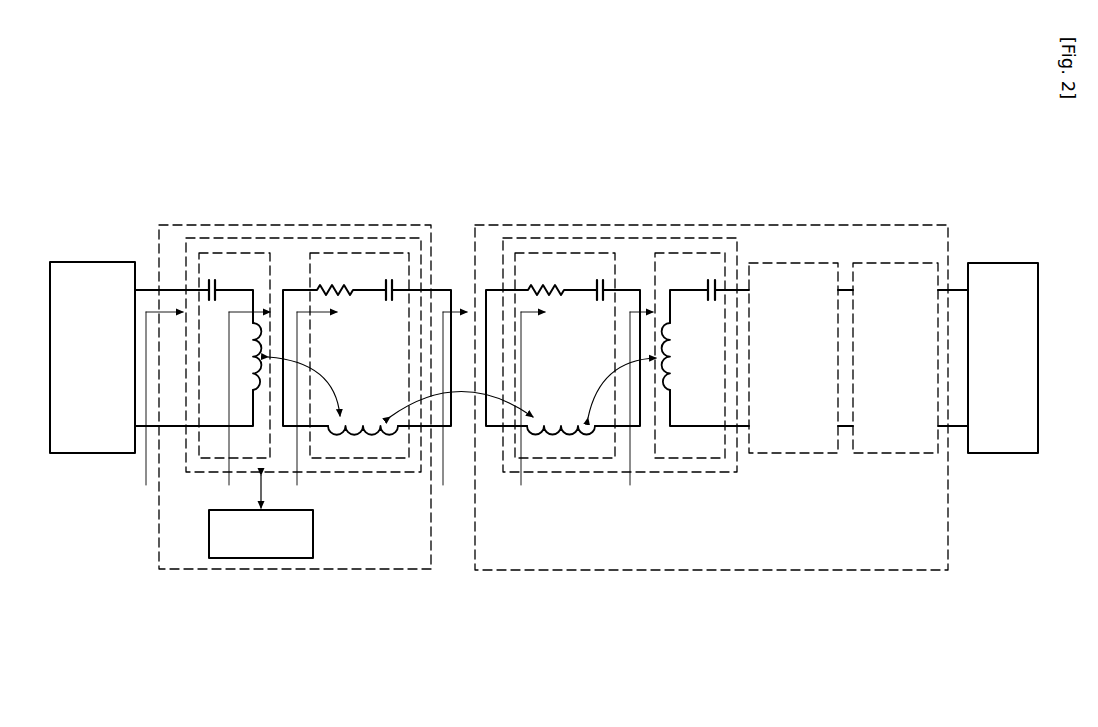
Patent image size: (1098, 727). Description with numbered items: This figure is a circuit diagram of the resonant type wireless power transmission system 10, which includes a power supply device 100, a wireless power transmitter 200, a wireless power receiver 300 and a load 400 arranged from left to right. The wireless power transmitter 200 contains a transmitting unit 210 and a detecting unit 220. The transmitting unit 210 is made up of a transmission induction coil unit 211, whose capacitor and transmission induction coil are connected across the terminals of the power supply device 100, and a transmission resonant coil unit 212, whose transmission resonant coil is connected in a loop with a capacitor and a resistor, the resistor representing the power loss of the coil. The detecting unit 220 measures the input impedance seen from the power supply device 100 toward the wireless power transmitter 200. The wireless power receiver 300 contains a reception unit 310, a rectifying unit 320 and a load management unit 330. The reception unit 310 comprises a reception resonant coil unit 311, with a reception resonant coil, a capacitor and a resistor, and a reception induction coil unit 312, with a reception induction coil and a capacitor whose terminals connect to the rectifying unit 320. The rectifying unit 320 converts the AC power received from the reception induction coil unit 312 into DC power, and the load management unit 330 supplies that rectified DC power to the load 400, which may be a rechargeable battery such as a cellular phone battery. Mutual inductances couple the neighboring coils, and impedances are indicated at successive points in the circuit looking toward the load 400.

The wireless power transmission system 10 is at (89, 59).
The power supply device 100 is at (93, 262).
The wireless power transmitter 200 is at (194, 225).
The transmitting unit 210 is at (308, 238).
The transmission induction coil unit 211 is at (237, 253).
The transmission resonant coil unit 212 is at (360, 253).
The detecting unit 220 is at (315, 521).
The wireless power receiver 300 is at (521, 225).
The reception unit 310 is at (623, 238).
The reception resonant coil unit 311 is at (567, 253).
The reception induction coil unit 312 is at (692, 253).
The rectifying unit 320 is at (795, 263).
The load management unit 330 is at (888, 263).
The load 400 is at (1005, 263).